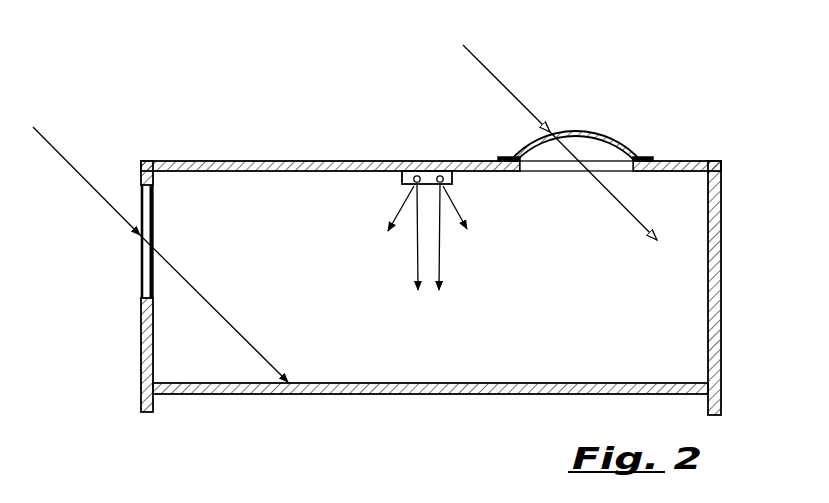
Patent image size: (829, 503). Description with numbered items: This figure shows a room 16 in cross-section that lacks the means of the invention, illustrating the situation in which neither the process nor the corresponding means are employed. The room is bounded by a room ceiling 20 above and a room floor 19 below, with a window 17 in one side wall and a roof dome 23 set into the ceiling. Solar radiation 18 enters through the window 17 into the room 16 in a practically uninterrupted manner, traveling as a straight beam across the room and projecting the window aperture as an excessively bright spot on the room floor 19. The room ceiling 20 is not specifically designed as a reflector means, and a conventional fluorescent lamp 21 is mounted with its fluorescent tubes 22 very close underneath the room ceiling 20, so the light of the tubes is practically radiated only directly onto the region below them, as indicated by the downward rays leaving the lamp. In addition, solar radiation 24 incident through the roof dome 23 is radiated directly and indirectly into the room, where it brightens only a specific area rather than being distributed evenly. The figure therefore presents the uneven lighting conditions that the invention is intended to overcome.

The room 16 is at (431, 269).
The window 17 is at (139, 281).
The solar radiation 18 is at (77, 167).
The room floor 19 is at (407, 372).
The room ceiling 20 is at (278, 161).
The fluorescent lamp 21 is at (428, 171).
The fluorescent tubes 22 is at (413, 181).
The roof dome 23 is at (610, 141).
The solar radiation 24 is at (500, 78).